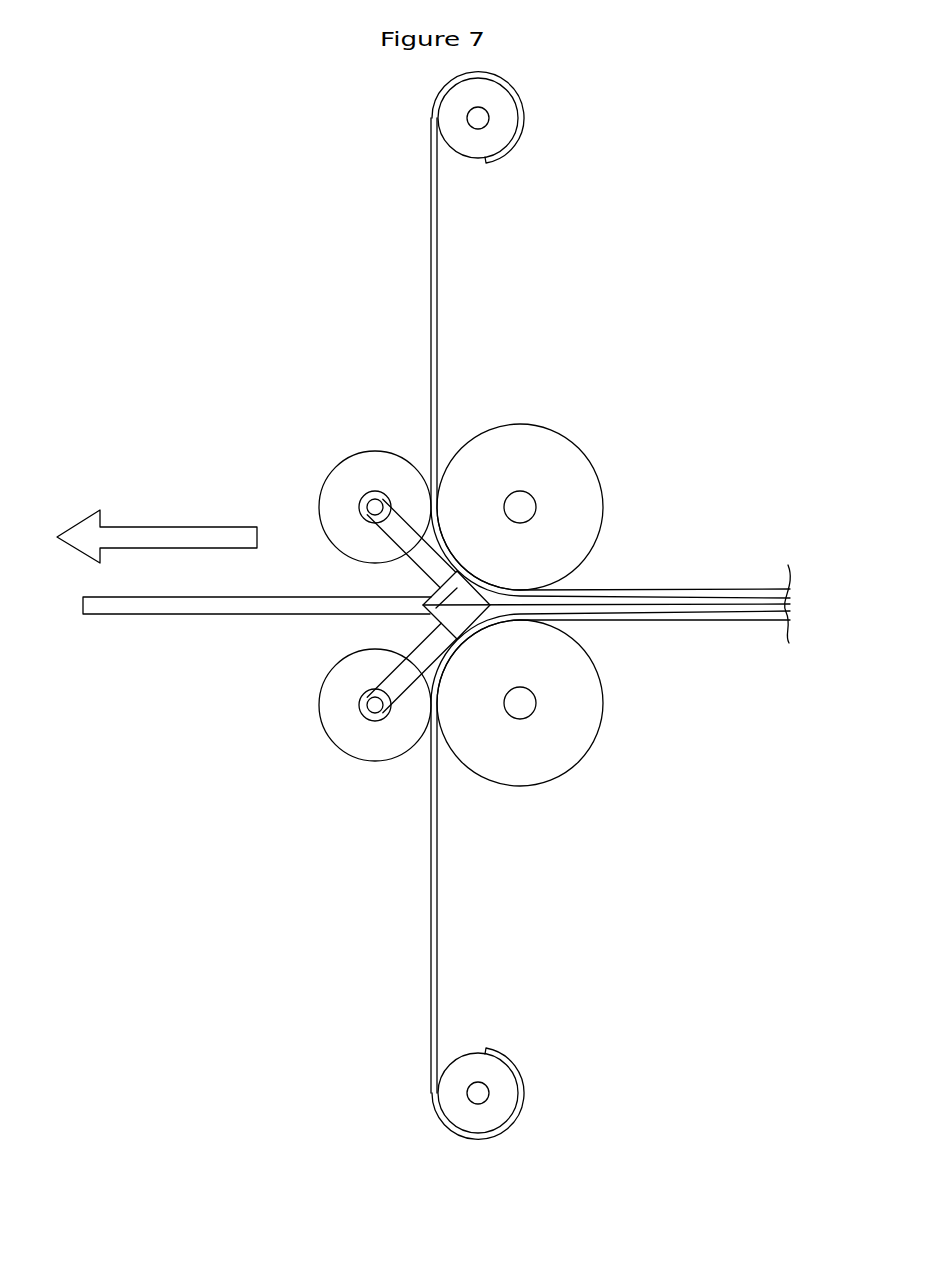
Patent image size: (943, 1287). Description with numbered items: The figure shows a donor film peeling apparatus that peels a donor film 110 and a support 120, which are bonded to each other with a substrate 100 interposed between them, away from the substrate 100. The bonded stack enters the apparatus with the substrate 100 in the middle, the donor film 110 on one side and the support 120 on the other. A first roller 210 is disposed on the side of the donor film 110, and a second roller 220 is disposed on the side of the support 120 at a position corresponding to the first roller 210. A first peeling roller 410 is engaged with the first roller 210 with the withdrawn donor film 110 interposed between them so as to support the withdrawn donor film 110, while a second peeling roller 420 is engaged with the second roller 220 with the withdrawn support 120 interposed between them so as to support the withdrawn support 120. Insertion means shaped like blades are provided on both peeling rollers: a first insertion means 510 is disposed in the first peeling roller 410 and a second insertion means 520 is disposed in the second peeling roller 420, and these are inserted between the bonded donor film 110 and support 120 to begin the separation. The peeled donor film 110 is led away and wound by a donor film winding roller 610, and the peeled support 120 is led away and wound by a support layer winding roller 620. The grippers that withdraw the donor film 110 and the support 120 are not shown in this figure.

The substrate 100 is at (103, 610).
The donor film 110 is at (437, 328).
The support 120 is at (437, 878).
The first roller 210 is at (570, 462).
The second roller 220 is at (588, 692).
The first peeling roller 410 is at (347, 468).
The second peeling roller 420 is at (345, 733).
The first insertion means 510 is at (426, 606).
The second insertion means 520 is at (458, 625).
The donor film winding roller 610 is at (450, 118).
The support layer winding roller 620 is at (452, 1097).